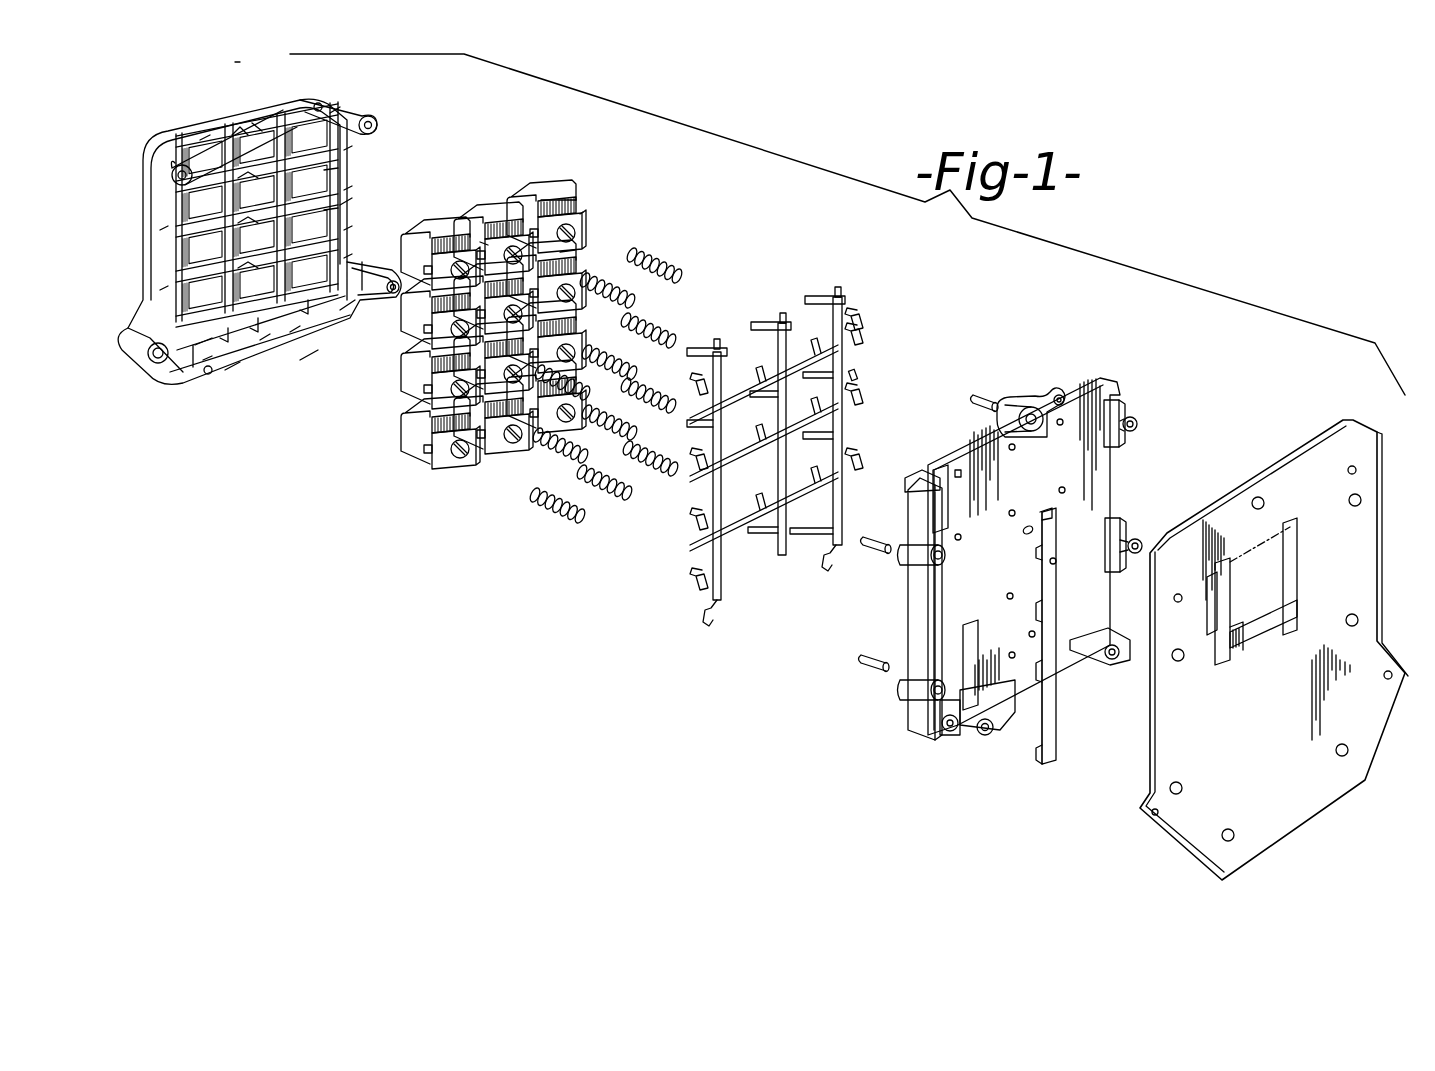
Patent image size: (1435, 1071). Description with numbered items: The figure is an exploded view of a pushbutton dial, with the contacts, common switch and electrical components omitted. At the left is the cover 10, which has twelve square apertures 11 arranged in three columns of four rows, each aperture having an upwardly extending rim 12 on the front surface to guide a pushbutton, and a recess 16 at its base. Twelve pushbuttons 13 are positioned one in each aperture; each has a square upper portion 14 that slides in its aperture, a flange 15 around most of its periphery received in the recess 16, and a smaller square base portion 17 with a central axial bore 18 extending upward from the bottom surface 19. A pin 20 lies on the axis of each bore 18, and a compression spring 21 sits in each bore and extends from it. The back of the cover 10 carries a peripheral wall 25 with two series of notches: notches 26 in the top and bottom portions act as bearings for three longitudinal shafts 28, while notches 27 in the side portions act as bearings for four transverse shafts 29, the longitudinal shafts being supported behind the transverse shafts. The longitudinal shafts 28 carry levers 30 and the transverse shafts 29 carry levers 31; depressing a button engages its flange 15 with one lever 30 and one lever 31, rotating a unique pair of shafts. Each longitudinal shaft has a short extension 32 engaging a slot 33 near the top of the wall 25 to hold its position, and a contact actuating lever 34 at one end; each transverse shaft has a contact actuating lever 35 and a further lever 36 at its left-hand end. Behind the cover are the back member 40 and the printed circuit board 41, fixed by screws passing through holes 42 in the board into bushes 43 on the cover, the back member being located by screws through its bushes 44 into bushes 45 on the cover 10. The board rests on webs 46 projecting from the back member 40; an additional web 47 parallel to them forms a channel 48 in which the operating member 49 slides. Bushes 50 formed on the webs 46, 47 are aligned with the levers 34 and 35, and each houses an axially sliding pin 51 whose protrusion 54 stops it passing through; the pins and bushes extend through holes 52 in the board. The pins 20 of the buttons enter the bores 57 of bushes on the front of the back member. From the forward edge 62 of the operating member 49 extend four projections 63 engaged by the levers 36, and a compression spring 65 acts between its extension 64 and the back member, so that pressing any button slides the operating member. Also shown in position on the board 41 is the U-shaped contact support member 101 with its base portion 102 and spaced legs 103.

The cover 10 is at (258, 132).
The square apertures 11 is at (305, 183).
The upwardly extending rim 12 is at (178, 212).
The pushbuttons 13 is at (565, 195).
The upper portion 14 is at (532, 195).
The flange 15 is at (575, 204).
The recess 16 is at (330, 180).
The base portion 17 is at (583, 213).
The central axial bore 18 is at (580, 230).
The bottom surface 19 is at (471, 252).
The pin 20 is at (575, 236).
The compression spring 21 is at (640, 310).
The peripherally extending wall or rib 25 is at (205, 138).
The notches 26 is at (236, 136).
The notches 27 is at (172, 202).
The longitudinal shafts 28 is at (727, 355).
The transverse shafts 29 is at (858, 340).
The levers 30 is at (772, 318).
The levers 31 is at (752, 380).
The short extension 32 is at (720, 340).
The slot 33 is at (238, 100).
The contact actuating lever 34 is at (780, 318).
The contact actuating lever 35 is at (866, 328).
The further lever 36 is at (700, 415).
The back member 40 is at (1105, 460).
The printed circuit board 41 is at (1368, 528).
The holes 42 is at (1358, 466).
The bushes 43 is at (182, 163).
The bushes 44 is at (1060, 395).
The bushes 45 is at (318, 103).
The webs 46 is at (1122, 412).
The additional web 47 is at (925, 520).
The guiding and support channel 48 is at (945, 545).
The operating member 49 is at (1056, 733).
The bushes 50 is at (1020, 400).
The axially sliding pin 51 is at (990, 392).
The holes 52 is at (1258, 497).
The protrusion 54 is at (870, 540).
The bores 57 is at (1061, 426).
The top or forward edge 62 is at (1042, 600).
The projections 63 is at (1040, 552).
The extension 64 is at (1042, 520).
The compression spring 65 is at (1024, 534).
The support member 101 is at (1249, 667).
The base portion 102 is at (1265, 628).
The legs 103 is at (1297, 568).